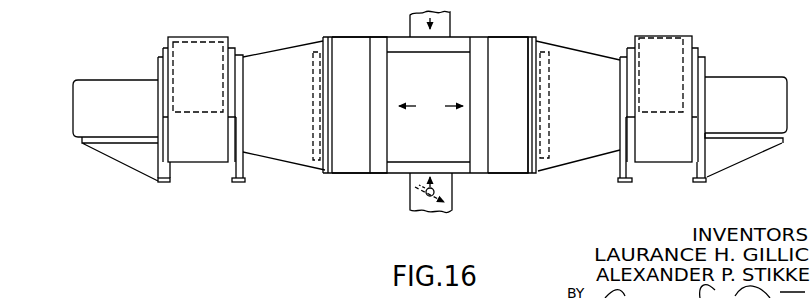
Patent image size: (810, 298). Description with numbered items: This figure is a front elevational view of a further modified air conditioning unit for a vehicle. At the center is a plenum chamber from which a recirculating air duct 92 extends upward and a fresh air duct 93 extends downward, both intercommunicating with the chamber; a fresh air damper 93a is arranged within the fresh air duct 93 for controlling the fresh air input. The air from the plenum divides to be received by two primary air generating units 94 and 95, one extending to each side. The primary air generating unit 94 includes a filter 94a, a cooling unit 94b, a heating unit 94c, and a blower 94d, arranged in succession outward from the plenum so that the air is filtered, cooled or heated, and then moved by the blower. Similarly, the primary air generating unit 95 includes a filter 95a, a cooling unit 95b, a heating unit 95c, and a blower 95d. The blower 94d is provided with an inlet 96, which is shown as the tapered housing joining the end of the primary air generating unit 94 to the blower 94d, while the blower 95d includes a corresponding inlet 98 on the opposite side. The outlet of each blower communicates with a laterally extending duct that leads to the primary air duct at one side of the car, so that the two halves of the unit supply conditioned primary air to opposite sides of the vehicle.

The recirculating air duct 92 is at (444, 23).
The fresh air duct 93 is at (452, 188).
The fresh air damper 93a is at (410, 198).
The primary air generating unit 94 is at (354, 35).
The filter 94a is at (377, 165).
The cooling unit 94b is at (340, 170).
The heating unit 94c is at (312, 152).
The blower 94d is at (200, 156).
The primary air generating unit 95 is at (532, 33).
The filter 95a is at (480, 43).
The cooling unit 95b is at (515, 158).
The heating unit 95c is at (555, 143).
The blower 95d is at (662, 157).
The inlet 96 is at (243, 88).
The inlet 98 is at (620, 77).